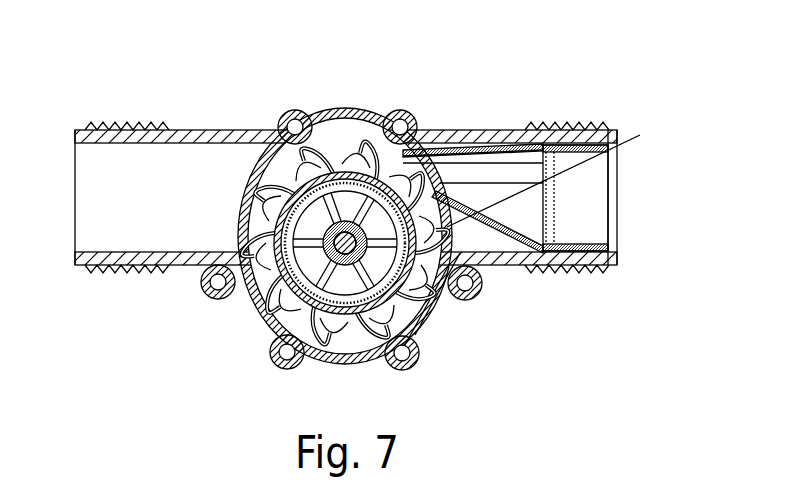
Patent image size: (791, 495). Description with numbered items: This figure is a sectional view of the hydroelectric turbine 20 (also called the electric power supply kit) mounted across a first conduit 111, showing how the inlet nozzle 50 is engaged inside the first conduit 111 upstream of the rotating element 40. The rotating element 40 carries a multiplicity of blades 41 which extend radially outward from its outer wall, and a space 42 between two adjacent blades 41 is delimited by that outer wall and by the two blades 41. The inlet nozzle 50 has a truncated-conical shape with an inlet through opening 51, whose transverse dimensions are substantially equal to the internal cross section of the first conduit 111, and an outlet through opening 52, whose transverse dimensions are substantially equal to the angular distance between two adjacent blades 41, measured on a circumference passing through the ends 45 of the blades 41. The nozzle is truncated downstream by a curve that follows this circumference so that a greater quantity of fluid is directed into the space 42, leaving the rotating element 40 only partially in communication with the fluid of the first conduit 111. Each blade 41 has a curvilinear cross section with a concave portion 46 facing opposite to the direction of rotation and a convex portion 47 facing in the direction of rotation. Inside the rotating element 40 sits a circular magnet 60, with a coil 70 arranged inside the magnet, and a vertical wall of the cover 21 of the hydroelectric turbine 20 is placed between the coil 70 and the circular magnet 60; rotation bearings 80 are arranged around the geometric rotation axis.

The hydroelectric turbine 20 is at (433, 320).
The cover 21 is at (268, 320).
The rotating element 40 is at (262, 216).
The blades 41 is at (330, 150).
The space 42 is at (410, 160).
The ends of the blades 45 is at (410, 165).
The concave portion 46 is at (272, 142).
The convex portion 47 is at (373, 300).
The inlet nozzle 50 is at (514, 250).
The inlet through opening 51 is at (608, 187).
The outlet through opening 52 is at (483, 155).
The circular magnet 60 is at (412, 336).
The coil 70 is at (557, 172).
The rotation bearings 80 is at (361, 268).
The first conduit 111 is at (478, 130).